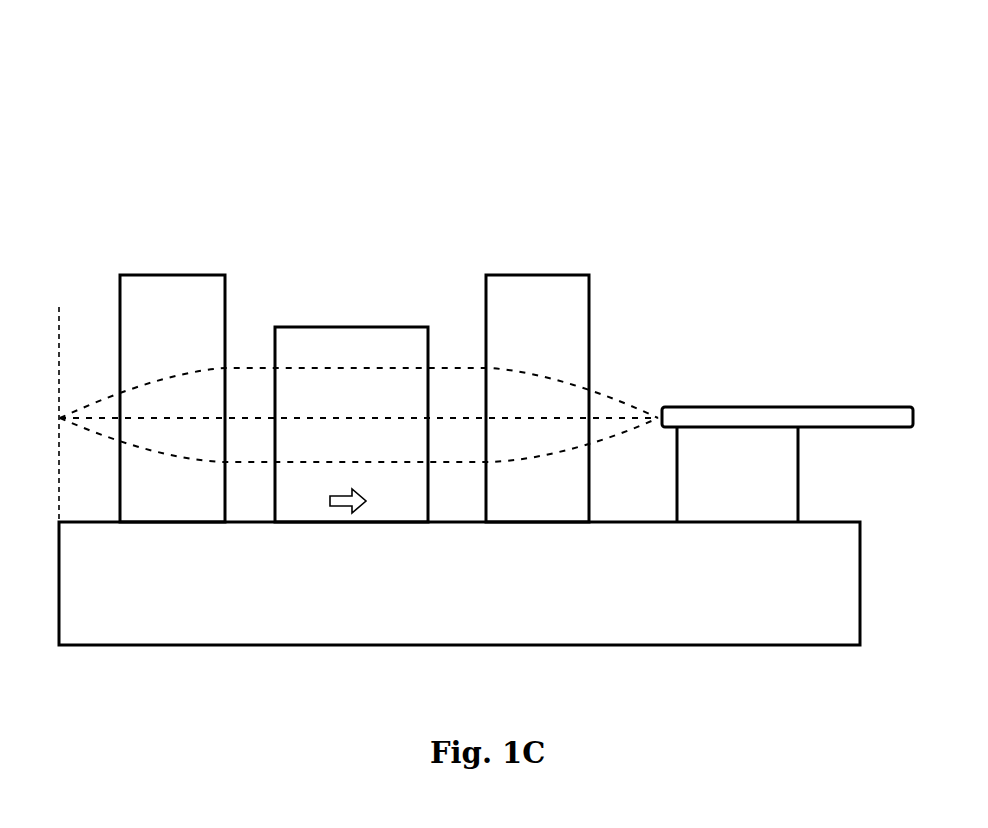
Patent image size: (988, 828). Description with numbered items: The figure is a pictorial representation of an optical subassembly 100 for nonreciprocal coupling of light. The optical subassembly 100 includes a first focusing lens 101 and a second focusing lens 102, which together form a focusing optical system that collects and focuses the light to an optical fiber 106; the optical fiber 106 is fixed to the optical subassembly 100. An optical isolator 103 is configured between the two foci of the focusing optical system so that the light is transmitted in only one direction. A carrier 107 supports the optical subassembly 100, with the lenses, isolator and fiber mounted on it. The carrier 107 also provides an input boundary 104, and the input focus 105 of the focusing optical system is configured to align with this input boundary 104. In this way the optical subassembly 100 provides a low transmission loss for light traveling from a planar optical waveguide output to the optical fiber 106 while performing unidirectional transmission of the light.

The optical subassembly 100 is at (59, 521).
The first focusing lens 101 is at (188, 278).
The second focusing lens 102 is at (560, 272).
The optical isolator 103 is at (390, 320).
The input boundary 104 is at (59, 402).
The input focus 105 is at (337, 415).
The optical fiber 106 is at (765, 400).
The carrier 107 is at (459, 583).